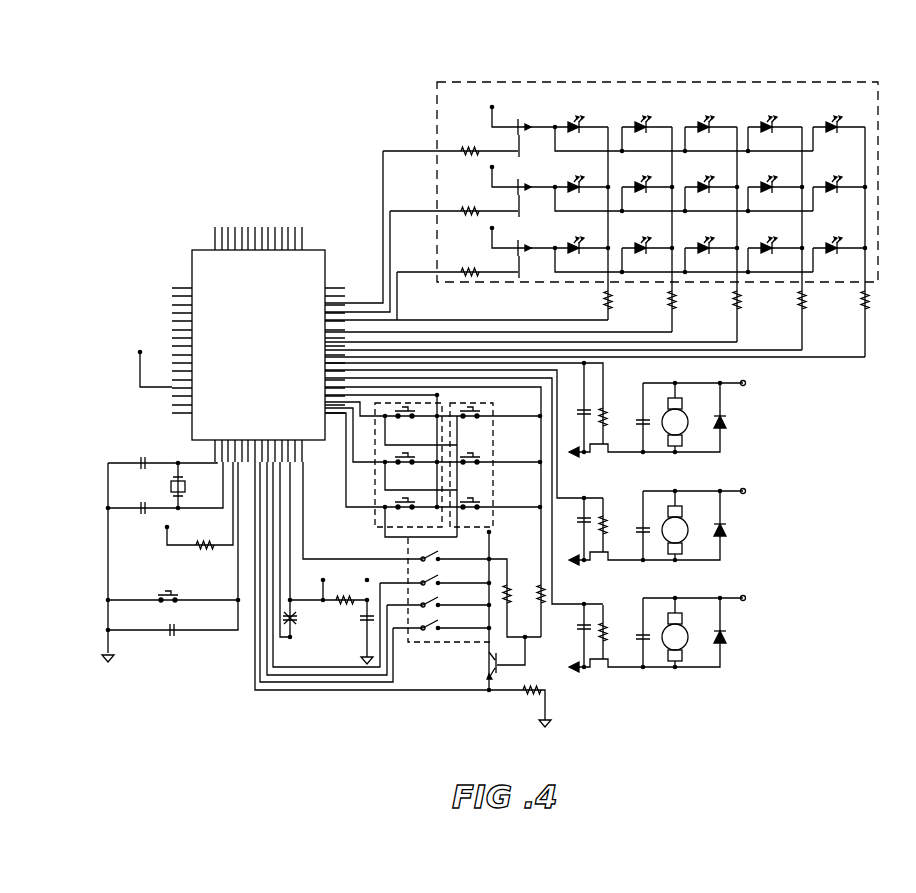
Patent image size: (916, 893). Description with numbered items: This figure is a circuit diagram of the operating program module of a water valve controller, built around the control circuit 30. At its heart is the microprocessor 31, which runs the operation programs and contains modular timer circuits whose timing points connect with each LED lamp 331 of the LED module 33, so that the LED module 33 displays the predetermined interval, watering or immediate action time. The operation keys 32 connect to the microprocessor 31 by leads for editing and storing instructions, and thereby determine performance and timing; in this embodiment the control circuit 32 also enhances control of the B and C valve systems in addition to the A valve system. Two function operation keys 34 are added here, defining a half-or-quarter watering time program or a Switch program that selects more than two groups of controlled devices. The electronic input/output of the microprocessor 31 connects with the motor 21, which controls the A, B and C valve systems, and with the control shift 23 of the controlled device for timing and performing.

The control circuit 30 is at (316, 224).
The microprocessor 31 is at (200, 272).
The operation keys 32 is at (370, 518).
The LED module 33 is at (690, 82).
The LED lamp 331 is at (782, 116).
The function operation key 34 is at (375, 430).
The control shift 23 is at (442, 643).
The motor 21 is at (678, 425).